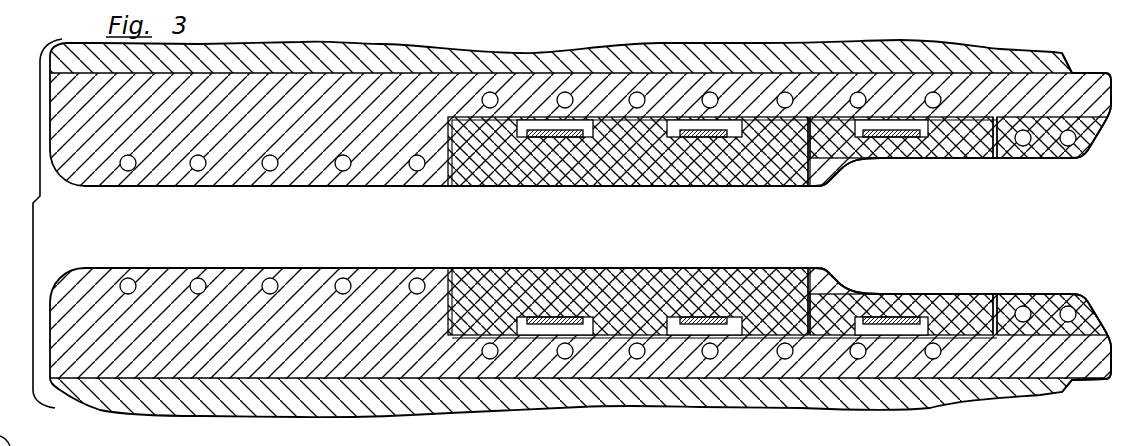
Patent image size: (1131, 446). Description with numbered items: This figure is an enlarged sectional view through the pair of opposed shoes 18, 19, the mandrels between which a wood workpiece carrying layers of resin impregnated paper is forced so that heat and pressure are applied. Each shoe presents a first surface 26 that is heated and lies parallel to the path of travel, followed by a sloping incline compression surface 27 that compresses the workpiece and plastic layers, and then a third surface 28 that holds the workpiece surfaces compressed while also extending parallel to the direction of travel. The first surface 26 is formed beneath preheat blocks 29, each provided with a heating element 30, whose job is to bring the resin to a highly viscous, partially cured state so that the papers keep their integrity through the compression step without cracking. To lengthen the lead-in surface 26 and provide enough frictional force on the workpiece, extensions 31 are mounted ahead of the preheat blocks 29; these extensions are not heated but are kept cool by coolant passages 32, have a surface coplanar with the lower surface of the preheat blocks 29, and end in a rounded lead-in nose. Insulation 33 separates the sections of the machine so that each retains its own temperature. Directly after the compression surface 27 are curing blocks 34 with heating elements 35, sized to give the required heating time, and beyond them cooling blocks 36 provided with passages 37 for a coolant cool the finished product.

The shoe 18 is at (723, 78).
The shoe 19 is at (743, 378).
The first surface 26 is at (968, 292).
The sloping incline compression surface 27 is at (870, 290).
The third surface 28 is at (702, 266).
The preheat block 29 is at (927, 158).
The heating element 30 is at (891, 122).
The extension 31 is at (1050, 120).
The coolant passage 32 is at (1067, 147).
The insulation 33 is at (973, 117).
The curing block 34 is at (737, 285).
The heating element 35 is at (669, 139).
The cooling block 36 is at (359, 281).
The passage 37 is at (413, 158).